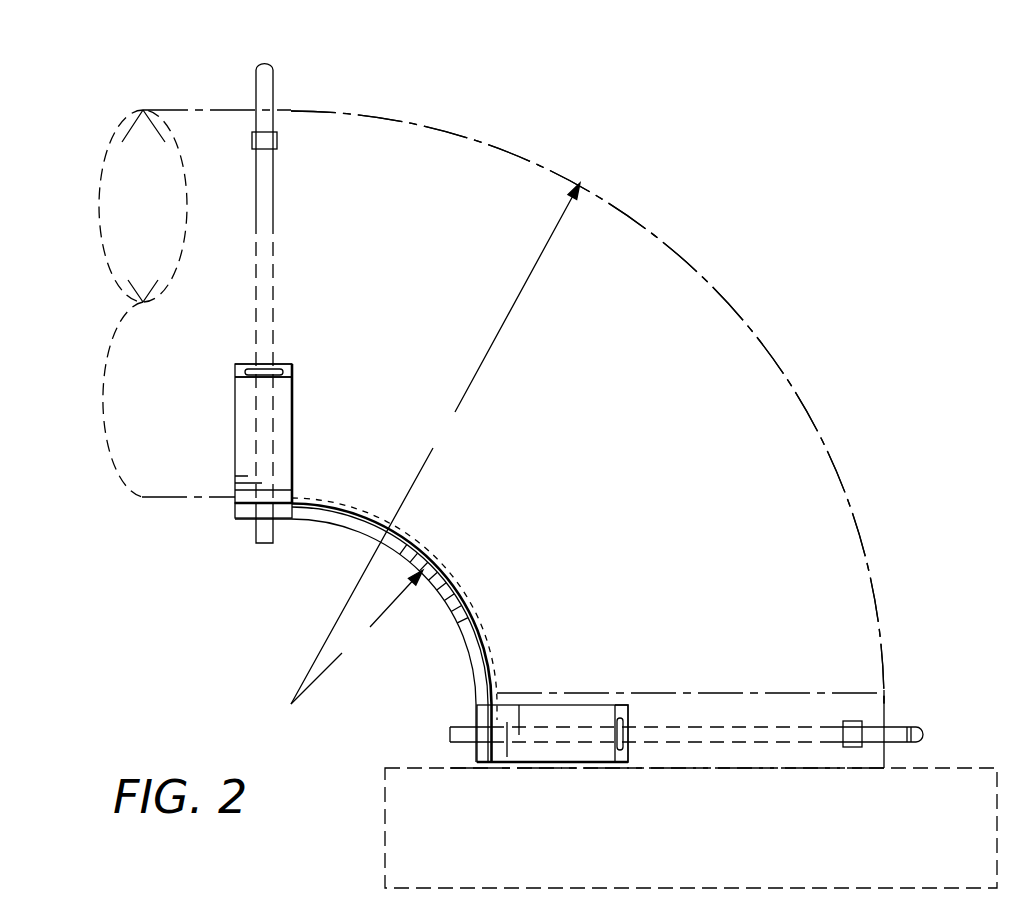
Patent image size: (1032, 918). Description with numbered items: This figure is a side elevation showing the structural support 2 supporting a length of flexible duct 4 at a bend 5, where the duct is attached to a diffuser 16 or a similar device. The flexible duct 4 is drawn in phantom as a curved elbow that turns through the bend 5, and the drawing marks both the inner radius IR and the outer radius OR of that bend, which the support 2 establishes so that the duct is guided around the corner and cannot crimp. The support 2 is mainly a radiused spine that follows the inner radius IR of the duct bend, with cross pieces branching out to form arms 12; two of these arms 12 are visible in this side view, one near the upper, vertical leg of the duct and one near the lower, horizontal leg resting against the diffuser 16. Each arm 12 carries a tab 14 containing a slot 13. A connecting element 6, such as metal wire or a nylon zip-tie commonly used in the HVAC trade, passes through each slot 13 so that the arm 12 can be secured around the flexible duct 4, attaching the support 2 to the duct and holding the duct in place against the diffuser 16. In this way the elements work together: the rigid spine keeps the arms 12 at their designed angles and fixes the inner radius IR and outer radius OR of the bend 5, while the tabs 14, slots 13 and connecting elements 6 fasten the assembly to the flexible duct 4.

The structural support 2 is at (176, 600).
The flexible duct 4 is at (658, 414).
The bend 5 is at (740, 310).
The connecting element 6 is at (258, 68).
The arm 12 is at (292, 444).
The slot 13 is at (280, 381).
The tab 14 is at (292, 366).
The diffuser 16 is at (722, 849).
The outer radius OR is at (435, 443).
The inner radius IR is at (357, 637).